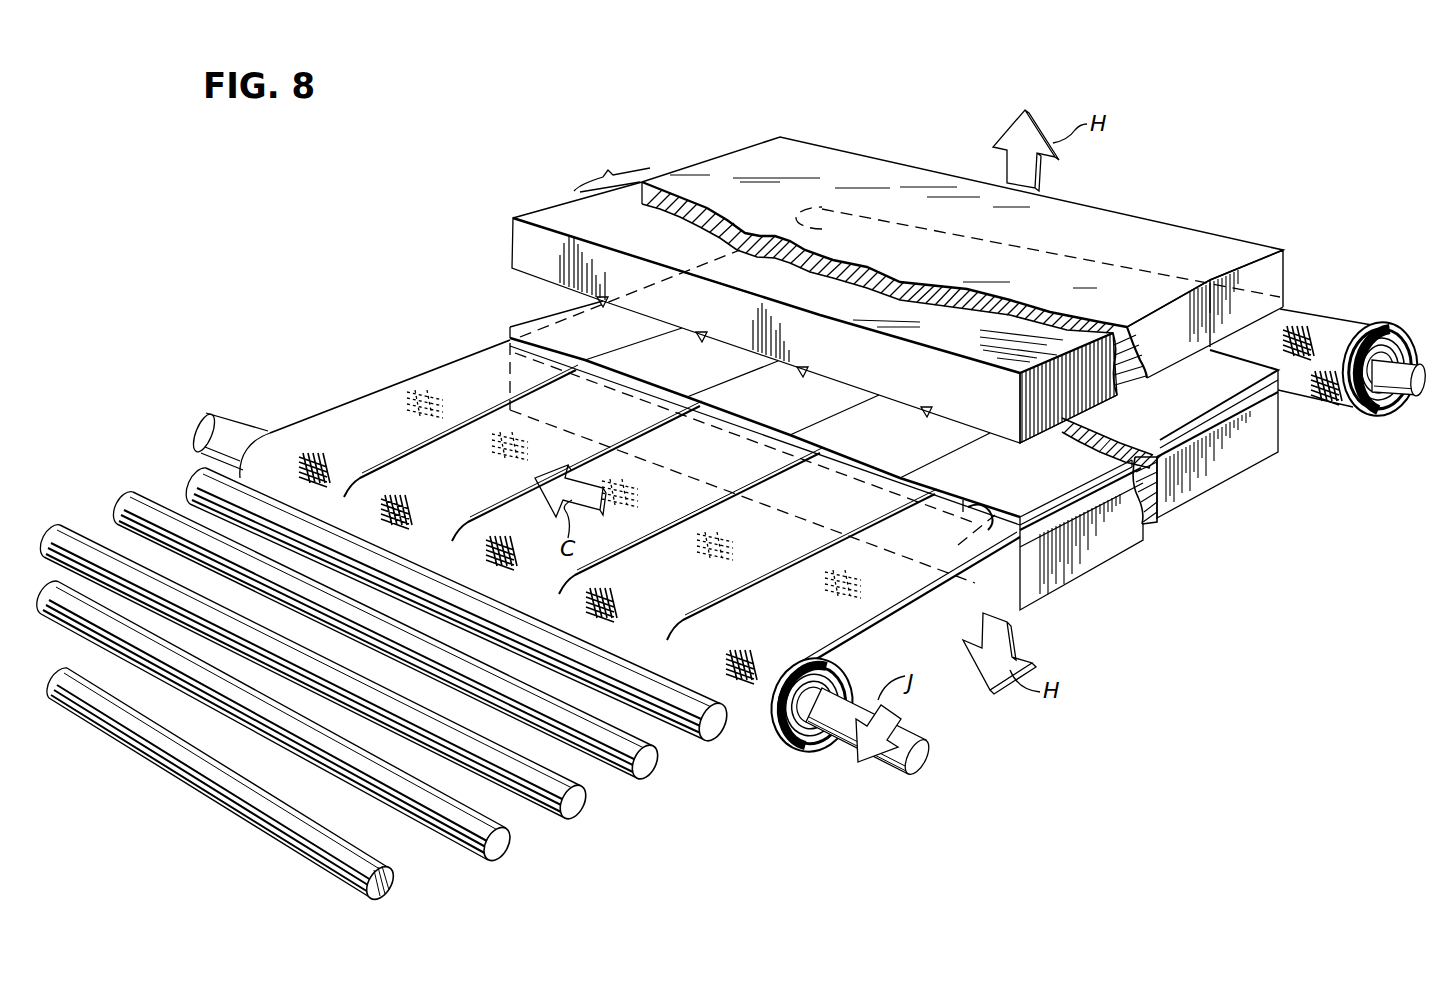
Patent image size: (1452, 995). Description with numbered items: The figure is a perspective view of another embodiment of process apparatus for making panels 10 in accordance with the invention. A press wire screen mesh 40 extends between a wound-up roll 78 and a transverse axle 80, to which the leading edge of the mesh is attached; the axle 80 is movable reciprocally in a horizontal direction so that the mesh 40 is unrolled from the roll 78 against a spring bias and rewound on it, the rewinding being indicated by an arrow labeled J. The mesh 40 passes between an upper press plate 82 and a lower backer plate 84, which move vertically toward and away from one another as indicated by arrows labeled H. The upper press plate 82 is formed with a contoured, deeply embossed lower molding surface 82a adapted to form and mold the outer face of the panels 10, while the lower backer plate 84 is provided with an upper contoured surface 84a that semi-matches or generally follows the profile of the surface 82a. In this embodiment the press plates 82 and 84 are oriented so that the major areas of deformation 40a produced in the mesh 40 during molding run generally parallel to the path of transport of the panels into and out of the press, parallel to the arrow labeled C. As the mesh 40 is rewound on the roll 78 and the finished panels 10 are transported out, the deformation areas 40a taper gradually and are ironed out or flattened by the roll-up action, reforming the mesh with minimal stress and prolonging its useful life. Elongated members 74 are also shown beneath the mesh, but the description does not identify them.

The panel 10 is at (1034, 483).
The press wire screen mesh 40 is at (905, 584).
The areas of deformation 40a is at (862, 531).
The rollers 74 is at (395, 882).
The wound-up roll 78 is at (790, 748).
The transverse axle 80 is at (1420, 396).
The upper press plate 82 is at (1207, 233).
The lower molding surface 82a is at (928, 408).
The lower backer plate 84 is at (1090, 560).
The upper contoured surface 84a is at (975, 538).